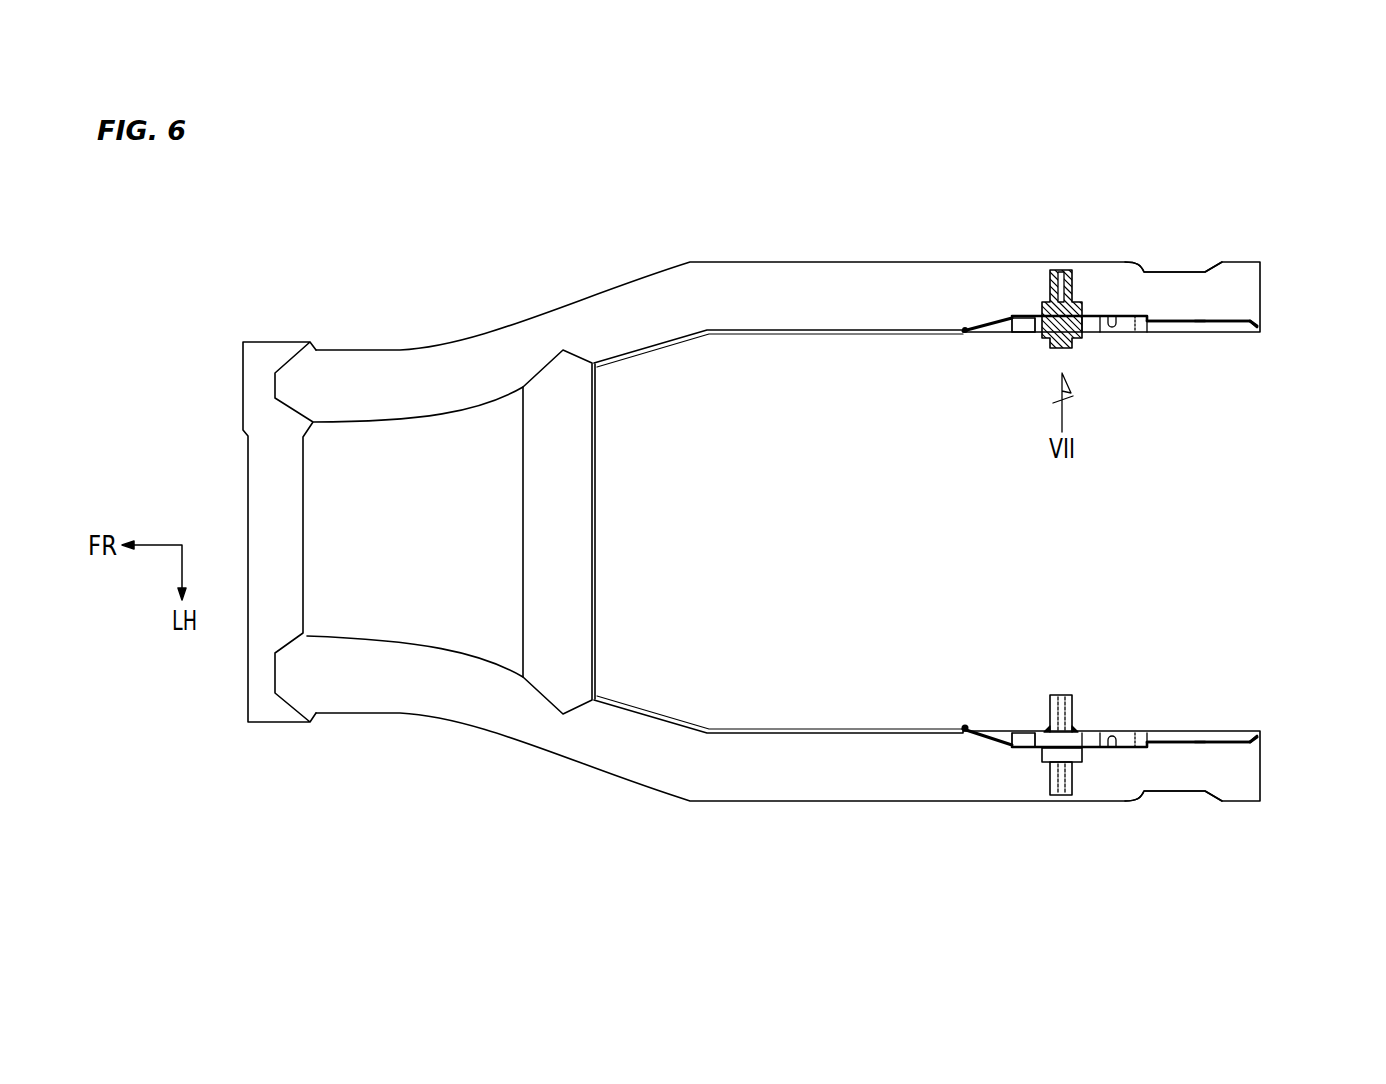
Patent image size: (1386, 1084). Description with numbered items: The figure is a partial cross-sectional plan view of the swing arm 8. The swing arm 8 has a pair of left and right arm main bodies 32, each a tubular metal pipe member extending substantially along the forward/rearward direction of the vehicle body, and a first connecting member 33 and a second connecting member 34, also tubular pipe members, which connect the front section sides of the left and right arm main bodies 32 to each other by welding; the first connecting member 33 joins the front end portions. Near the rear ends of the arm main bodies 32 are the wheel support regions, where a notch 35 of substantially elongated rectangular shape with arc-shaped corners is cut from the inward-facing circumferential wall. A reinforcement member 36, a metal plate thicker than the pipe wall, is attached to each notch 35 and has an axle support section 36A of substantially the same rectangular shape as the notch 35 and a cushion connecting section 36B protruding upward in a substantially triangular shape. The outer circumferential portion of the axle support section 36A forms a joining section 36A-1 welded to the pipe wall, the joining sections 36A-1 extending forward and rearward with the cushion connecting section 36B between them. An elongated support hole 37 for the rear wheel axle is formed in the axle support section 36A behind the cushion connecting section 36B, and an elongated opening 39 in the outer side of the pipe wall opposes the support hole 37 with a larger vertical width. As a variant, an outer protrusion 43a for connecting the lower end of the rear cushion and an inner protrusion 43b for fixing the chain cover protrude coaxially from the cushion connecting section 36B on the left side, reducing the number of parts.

The swing arm 8 is at (975, 212).
The arm main body 32 is at (780, 270).
The first connecting member 33 is at (253, 472).
The second connecting member 34 is at (577, 543).
The notch 35 is at (1113, 316).
The reinforcement member 36 is at (1116, 356).
The axle support section 36A is at (1176, 335).
The joining section 36A-1 is at (990, 321).
The cushion connecting section 36B is at (1040, 337).
The support hole 37 is at (1197, 322).
The opening 39 is at (1178, 268).
The outer protrusion 43a is at (1055, 270).
The inner protrusion 43b is at (1055, 695).